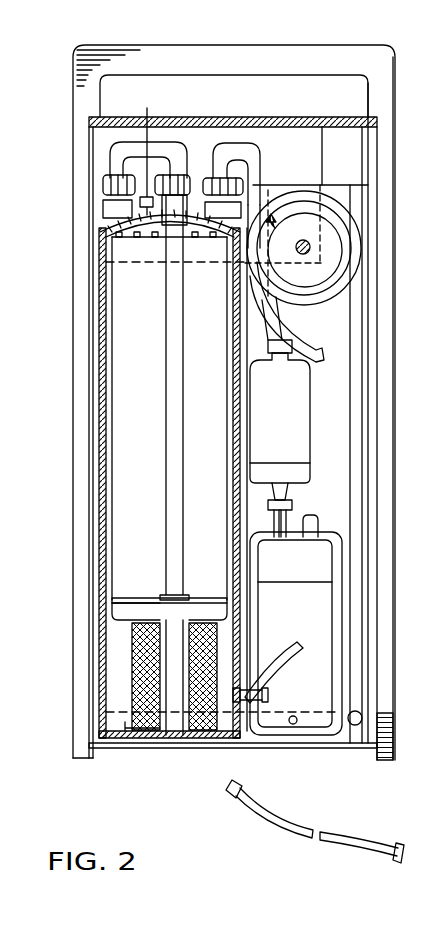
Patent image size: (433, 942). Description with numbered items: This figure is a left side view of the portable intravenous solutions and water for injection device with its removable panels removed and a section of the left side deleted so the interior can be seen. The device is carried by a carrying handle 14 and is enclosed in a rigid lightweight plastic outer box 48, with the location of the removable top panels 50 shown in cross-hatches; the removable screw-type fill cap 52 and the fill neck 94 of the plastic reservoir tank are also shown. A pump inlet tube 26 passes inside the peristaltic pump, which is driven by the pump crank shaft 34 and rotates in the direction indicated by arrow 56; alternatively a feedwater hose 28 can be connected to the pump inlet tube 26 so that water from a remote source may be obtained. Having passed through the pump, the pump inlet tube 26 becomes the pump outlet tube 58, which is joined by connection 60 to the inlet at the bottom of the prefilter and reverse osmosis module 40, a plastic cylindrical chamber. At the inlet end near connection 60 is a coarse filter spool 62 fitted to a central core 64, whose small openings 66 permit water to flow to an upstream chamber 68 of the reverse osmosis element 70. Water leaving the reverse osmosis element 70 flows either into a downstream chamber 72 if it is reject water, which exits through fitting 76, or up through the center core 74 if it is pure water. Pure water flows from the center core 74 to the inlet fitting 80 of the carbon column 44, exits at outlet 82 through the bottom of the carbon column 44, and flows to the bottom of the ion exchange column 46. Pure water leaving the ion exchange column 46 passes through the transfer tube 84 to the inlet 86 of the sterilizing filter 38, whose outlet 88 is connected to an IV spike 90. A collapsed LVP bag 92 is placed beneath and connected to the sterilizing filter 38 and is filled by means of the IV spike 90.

The carrying handle 14 is at (346, 47).
The pump inlet tube 26 is at (356, 565).
The feedwater hose 28 is at (290, 830).
The pump crank shaft 34 is at (313, 258).
The sterilizing filter 38 is at (294, 443).
The prefilter and reverse osmosis module 40 is at (94, 537).
The carbon column 44 is at (113, 208).
The ion exchange column 46 is at (272, 183).
The outer box 48 is at (82, 473).
The removable panels 50 is at (182, 117).
The fill cap 52 is at (370, 120).
The arrow 56 is at (312, 247).
The pump outlet tube 58 is at (325, 350).
The connection 60 is at (247, 740).
The coarse filter spool 62 is at (145, 680).
The central core 64 is at (179, 710).
The small openings 66 is at (150, 730).
The upstream chamber 68 is at (136, 605).
The reverse osmosis element 70 is at (140, 437).
The downstream chamber 72 is at (107, 232).
The center core 74 is at (166, 388).
The fitting 76 is at (150, 150).
The inlet fitting 80 is at (108, 183).
The outlet 82 is at (221, 205).
The transfer tube 84 is at (258, 168).
The inlet 86 is at (270, 350).
The outlet 88 is at (289, 498).
The IV spike 90 is at (272, 515).
The collapsed LVP bag 92 is at (310, 577).
The fill neck 94 is at (362, 145).